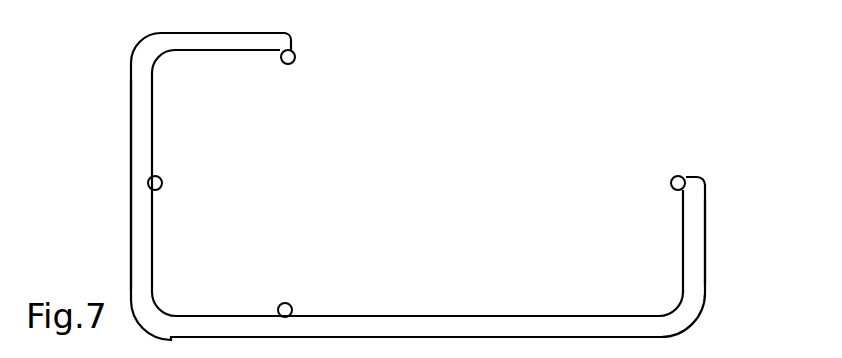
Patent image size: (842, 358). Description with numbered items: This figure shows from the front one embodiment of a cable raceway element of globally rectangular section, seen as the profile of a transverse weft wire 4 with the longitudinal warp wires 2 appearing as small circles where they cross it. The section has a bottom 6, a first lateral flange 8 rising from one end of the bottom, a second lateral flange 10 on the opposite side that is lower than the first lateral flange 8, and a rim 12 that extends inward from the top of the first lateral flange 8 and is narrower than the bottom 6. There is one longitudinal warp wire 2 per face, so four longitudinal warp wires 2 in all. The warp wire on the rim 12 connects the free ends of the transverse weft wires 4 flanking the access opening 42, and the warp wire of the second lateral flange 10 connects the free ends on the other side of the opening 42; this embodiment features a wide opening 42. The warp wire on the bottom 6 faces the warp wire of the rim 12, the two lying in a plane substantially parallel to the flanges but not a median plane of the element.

The opening 42 is at (508, 102).
The longitudinal warp wire 2 is at (292, 68).
The transverse weft wire 4 is at (691, 300).
The bottom 6 is at (391, 328).
The first lateral flange 8 is at (137, 132).
The second lateral flange 10 is at (690, 267).
The rim 12 is at (223, 42).